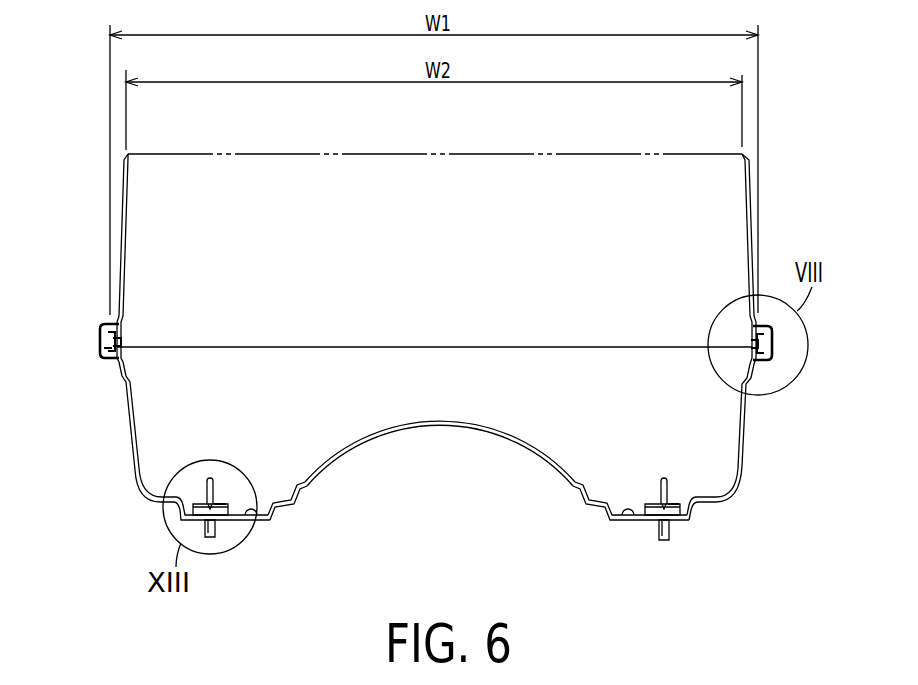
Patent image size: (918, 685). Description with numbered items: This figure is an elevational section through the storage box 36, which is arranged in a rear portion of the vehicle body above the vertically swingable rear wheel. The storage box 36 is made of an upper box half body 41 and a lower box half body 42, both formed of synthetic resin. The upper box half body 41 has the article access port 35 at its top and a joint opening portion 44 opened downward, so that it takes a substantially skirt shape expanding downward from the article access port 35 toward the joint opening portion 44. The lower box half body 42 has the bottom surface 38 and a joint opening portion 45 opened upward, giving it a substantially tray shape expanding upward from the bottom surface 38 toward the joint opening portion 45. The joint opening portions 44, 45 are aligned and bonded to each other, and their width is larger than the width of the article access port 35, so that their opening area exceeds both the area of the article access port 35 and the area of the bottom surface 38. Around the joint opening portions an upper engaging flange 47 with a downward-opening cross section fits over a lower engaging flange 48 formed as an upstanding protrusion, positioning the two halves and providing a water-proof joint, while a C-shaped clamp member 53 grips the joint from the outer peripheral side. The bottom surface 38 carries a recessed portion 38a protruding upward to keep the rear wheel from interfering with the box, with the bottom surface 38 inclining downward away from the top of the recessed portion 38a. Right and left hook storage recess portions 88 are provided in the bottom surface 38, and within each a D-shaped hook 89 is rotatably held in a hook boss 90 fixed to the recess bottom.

The storage box 36 is at (84, 190).
The article access port 35 is at (612, 152).
The upper box half body 41 is at (121, 240).
The lower box half body 42 is at (126, 416).
The upper engaging flange 47 is at (101, 331).
The clamp member 53 is at (100, 350).
The lower engaging flange 48 is at (121, 341).
The joint opening portion 45 is at (268, 346).
The joint opening portion 44 is at (300, 348).
The bottom surface 38 is at (370, 430).
The recessed portion 38a is at (460, 428).
The hook storage recess portion 88 is at (260, 521).
The hook 89 is at (208, 474).
The hook boss 90 is at (223, 502).